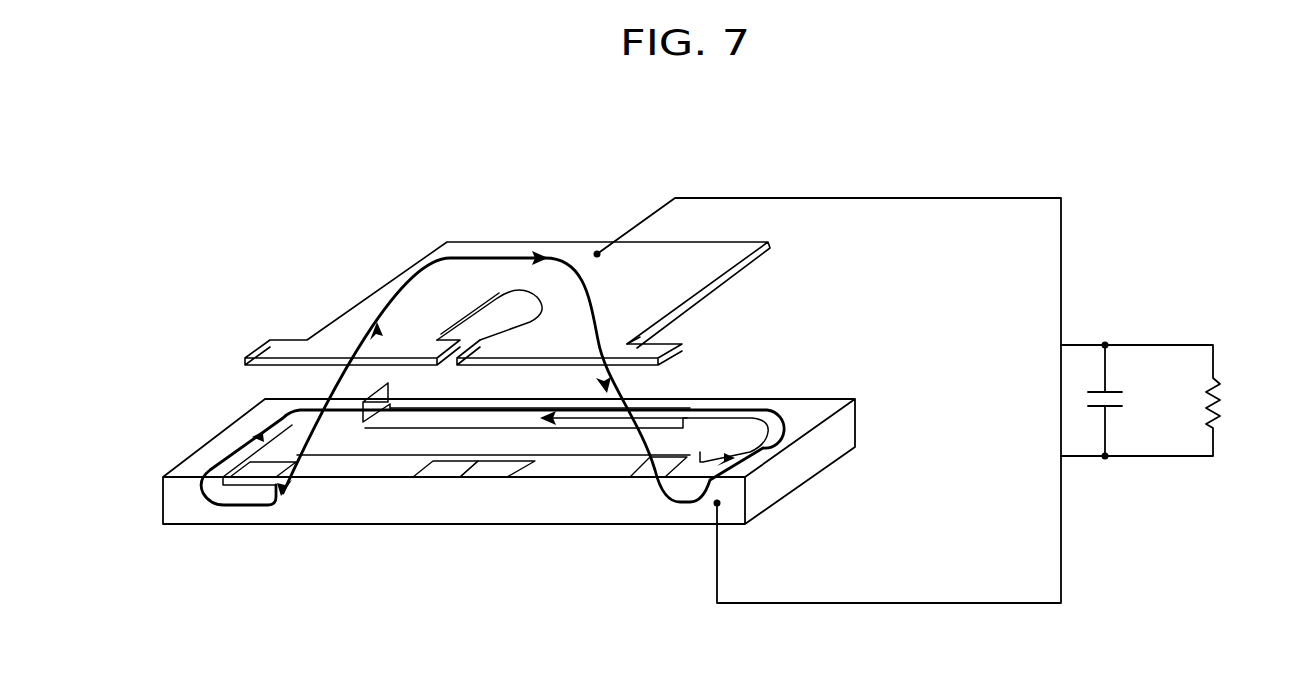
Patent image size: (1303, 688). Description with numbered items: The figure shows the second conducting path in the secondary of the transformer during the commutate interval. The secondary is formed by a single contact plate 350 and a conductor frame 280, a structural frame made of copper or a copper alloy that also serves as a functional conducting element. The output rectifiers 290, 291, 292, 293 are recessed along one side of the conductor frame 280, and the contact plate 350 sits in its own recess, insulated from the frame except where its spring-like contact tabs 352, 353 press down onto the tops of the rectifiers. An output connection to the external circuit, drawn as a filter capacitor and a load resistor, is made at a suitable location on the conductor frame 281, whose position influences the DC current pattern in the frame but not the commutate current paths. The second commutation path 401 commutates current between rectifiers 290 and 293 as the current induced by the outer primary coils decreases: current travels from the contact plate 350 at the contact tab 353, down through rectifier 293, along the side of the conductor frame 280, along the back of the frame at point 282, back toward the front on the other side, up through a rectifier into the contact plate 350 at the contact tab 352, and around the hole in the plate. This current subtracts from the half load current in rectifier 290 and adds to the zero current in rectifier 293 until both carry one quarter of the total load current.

The conductor frame 280 is at (218, 450).
The connection on the conductor frame 281 is at (717, 503).
The point on the back of the conductor frame 282 is at (610, 410).
The rectifier 290 is at (275, 470).
The rectifier 291 is at (422, 473).
The rectifier 292 is at (512, 473).
The rectifier 293 is at (645, 473).
The contact plate 350 is at (542, 303).
The contact tab 352 is at (343, 347).
The contact tab 353 is at (628, 340).
The second commutation path 401 is at (457, 258).